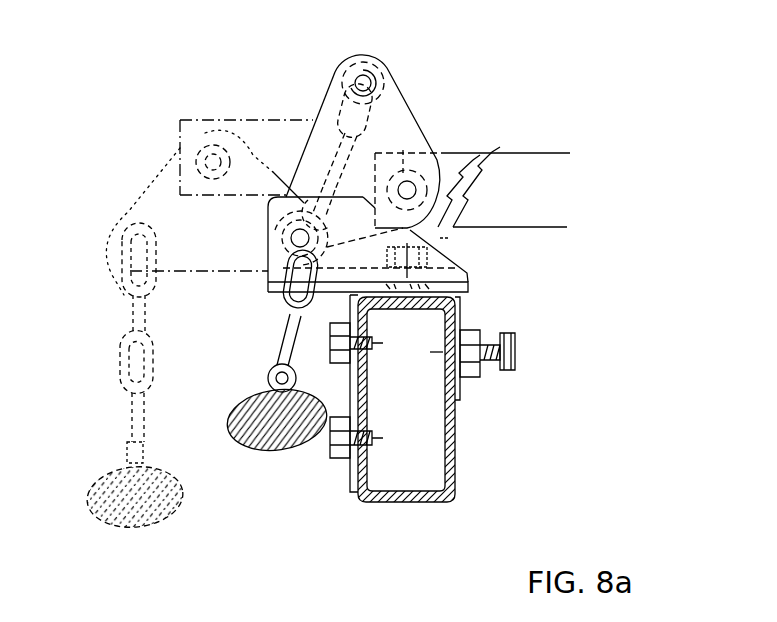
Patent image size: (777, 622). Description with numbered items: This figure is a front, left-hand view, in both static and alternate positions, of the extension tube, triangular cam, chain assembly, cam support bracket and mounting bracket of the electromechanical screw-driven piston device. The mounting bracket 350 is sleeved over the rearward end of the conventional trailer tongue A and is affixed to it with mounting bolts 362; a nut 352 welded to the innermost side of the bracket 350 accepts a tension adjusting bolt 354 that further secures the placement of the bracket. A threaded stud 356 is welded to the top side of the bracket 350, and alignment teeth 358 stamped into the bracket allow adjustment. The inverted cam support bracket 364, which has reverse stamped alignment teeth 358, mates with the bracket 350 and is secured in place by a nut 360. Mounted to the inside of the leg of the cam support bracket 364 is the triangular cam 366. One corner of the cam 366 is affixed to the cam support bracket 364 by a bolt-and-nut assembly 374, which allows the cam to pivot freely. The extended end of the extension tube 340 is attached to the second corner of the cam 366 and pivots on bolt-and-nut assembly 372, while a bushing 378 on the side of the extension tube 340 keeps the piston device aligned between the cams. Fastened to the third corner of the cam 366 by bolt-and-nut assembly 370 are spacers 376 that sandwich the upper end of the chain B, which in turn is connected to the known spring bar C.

The extension tube 340 is at (488, 157).
The bracket 350 is at (470, 290).
The nut 352 is at (475, 372).
The tension adjusting bolt 354 is at (512, 352).
The threaded stud 356 is at (447, 239).
The alignment teeth 358 is at (457, 303).
The nut 360 is at (430, 258).
The mounting bolt 362 is at (333, 420).
The cam support bracket 364 is at (467, 277).
The triangular cam 366 is at (392, 115).
The bolt-and-nut assembly 370 is at (363, 82).
The bolt-and-nut assembly 372 is at (407, 186).
The bolt-and-nut assembly 374 is at (299, 240).
The spacer 376 is at (348, 79).
The bushing 378 is at (403, 150).
The trailer tongue A is at (436, 474).
The chain B is at (280, 343).
The spring bar C is at (275, 447).